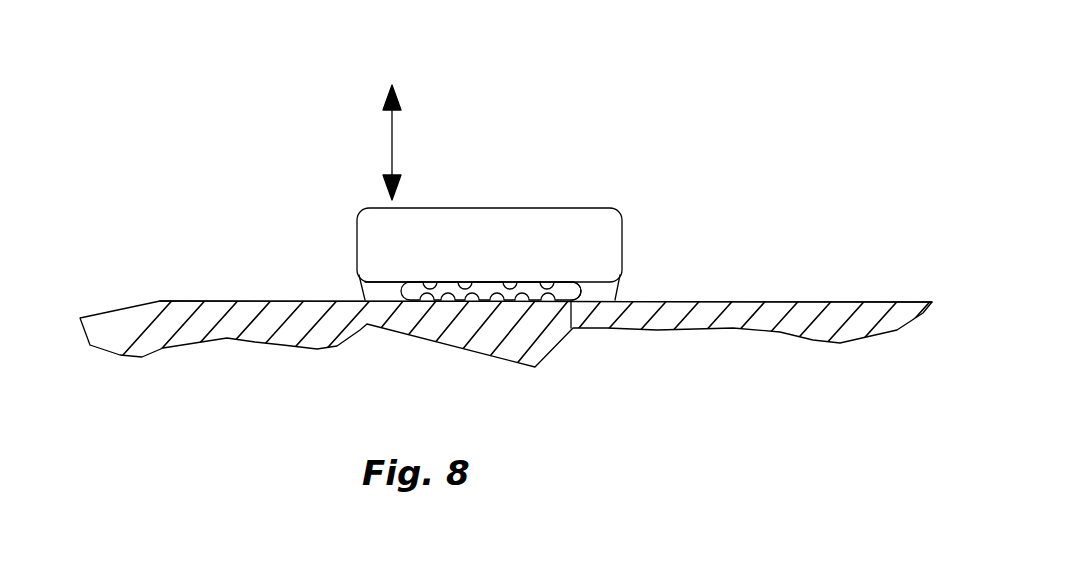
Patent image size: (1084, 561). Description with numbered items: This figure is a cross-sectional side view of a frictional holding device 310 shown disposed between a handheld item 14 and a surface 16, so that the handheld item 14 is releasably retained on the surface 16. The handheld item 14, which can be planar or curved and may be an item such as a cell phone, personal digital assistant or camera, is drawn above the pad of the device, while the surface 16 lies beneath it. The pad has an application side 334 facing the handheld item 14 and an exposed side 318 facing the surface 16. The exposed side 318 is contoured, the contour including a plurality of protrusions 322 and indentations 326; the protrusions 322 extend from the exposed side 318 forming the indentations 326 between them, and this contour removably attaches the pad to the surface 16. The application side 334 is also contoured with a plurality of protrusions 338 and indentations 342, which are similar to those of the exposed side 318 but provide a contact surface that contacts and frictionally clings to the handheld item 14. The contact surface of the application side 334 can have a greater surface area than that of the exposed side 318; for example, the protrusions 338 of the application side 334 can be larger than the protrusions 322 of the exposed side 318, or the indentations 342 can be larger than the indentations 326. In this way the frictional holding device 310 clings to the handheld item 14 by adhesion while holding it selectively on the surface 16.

The handheld item 14 is at (433, 208).
The surface 16 is at (267, 300).
The frictional holding device 310 is at (592, 290).
The exposed side 318 is at (443, 297).
The protrusions 322 is at (469, 282).
The indentations 326 is at (568, 282).
The application side 334 is at (412, 282).
The protrusions 338 is at (502, 301).
The indentations 342 is at (571, 293).